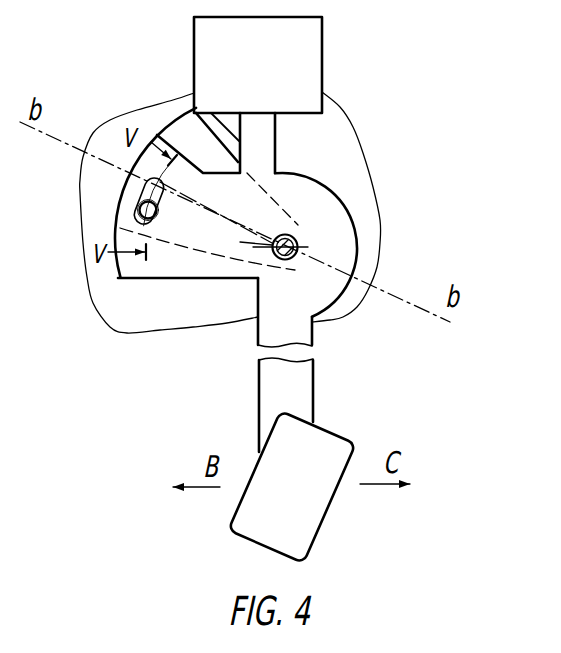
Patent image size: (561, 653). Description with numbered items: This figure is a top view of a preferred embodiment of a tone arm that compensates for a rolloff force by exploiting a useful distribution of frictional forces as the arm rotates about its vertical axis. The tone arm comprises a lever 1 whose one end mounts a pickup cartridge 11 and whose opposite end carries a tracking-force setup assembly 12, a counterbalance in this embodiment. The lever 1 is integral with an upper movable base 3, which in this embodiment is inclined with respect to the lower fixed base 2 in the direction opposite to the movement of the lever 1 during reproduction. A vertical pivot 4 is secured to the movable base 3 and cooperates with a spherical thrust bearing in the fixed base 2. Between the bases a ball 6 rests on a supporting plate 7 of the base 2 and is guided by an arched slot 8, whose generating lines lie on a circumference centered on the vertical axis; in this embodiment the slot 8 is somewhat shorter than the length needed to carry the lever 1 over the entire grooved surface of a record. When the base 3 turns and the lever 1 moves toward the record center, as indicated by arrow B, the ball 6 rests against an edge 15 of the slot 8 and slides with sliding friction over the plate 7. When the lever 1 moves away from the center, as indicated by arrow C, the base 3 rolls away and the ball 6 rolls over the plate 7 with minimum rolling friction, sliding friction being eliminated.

The lever 1 is at (305, 392).
The lower fixed base 2 is at (197, 108).
The upper movable base 3 is at (176, 264).
The vertical pivot 4 is at (296, 240).
The ball 6 is at (153, 222).
The supporting plate 7 is at (172, 128).
The arched slot 8 is at (162, 180).
The pickup cartridge 11 is at (258, 537).
The tracking-force setup assembly 12 is at (307, 77).
The edge of the slot 15 is at (136, 212).